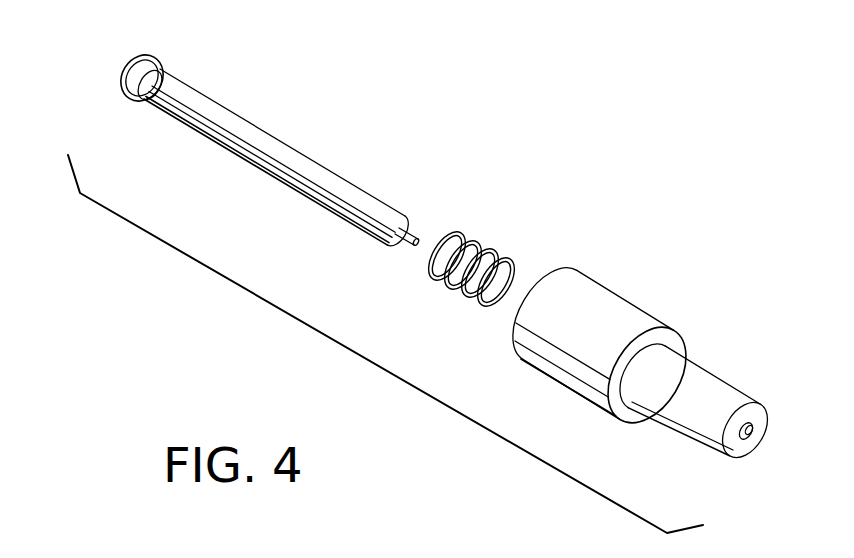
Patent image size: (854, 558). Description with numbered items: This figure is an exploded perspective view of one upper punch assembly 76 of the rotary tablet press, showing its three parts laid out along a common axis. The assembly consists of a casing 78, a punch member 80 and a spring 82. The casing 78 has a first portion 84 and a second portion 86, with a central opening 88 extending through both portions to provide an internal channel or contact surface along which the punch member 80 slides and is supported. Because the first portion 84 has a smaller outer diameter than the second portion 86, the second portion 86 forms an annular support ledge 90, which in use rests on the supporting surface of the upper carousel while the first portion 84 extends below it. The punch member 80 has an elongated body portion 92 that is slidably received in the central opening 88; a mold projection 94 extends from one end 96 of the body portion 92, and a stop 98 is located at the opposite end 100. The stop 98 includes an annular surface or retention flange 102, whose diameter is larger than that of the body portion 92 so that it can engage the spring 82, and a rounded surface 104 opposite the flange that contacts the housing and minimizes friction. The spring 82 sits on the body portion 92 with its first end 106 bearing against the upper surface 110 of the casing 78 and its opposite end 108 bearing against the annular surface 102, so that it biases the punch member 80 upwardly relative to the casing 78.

The upper punch assembly 76 is at (272, 112).
The casing 78 is at (595, 293).
The punch member 80 is at (355, 192).
The spring 82 is at (497, 242).
The first portion 84 is at (710, 390).
The second portion 86 is at (637, 315).
The central opening 88 is at (753, 430).
The annular support ledge 90 is at (646, 414).
The elongated body portion 92 is at (322, 172).
The mold projection 94 is at (418, 227).
The end of body portion 96 is at (400, 241).
The stop 98 is at (125, 58).
The end of body portion 100 is at (160, 92).
The annular surface or retention flange 102 is at (163, 68).
The rounded surface 104 is at (122, 74).
The first end of spring 106 is at (514, 322).
The opposite end of spring 108 is at (448, 228).
The upper surface of casing 110 is at (512, 332).